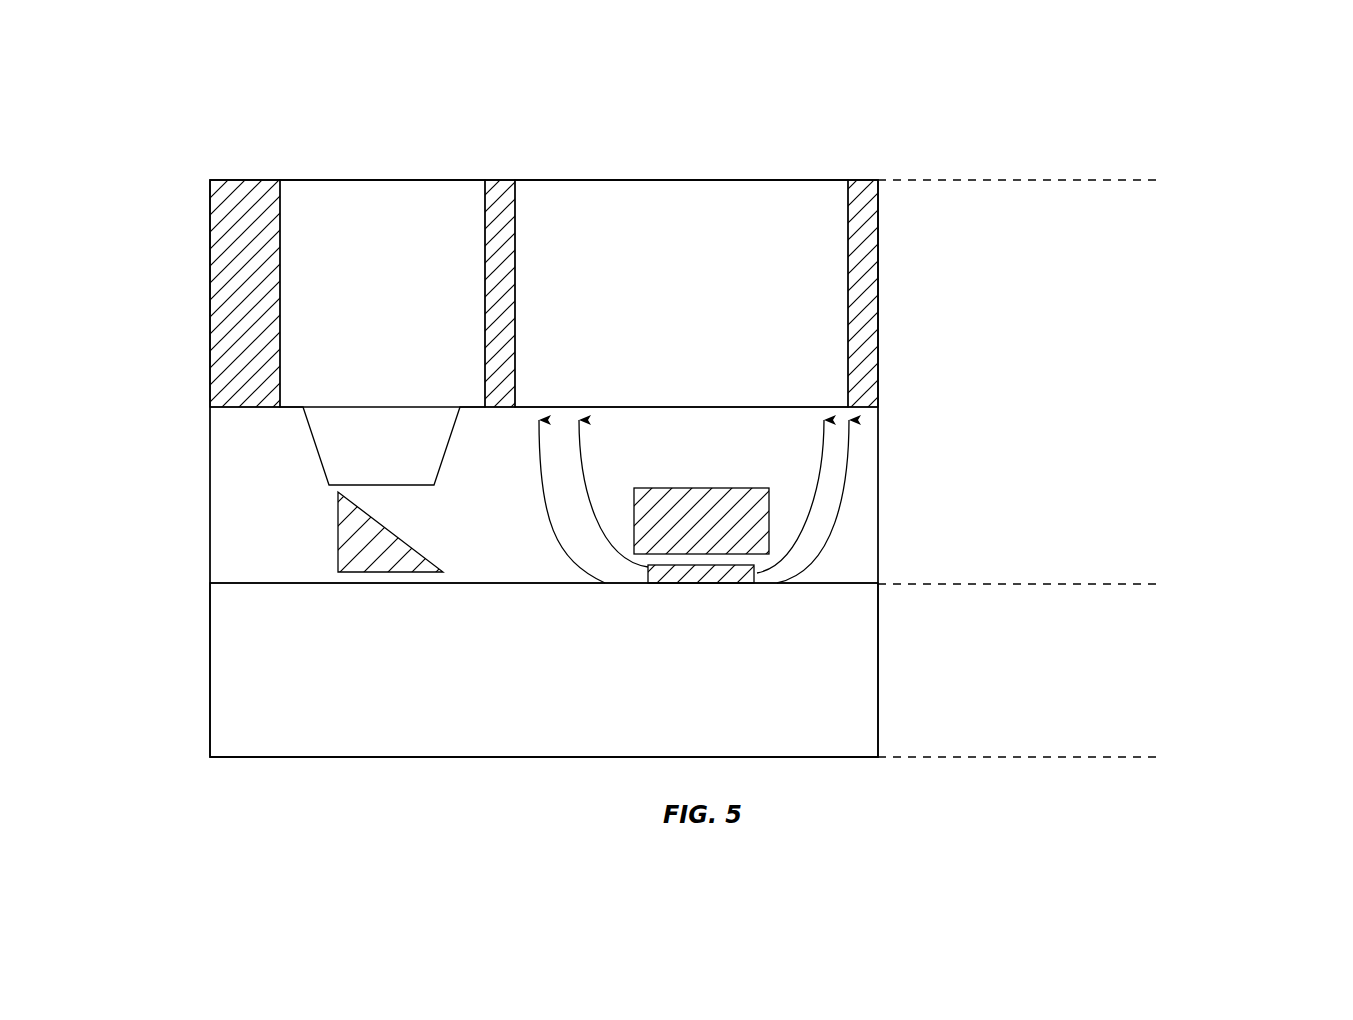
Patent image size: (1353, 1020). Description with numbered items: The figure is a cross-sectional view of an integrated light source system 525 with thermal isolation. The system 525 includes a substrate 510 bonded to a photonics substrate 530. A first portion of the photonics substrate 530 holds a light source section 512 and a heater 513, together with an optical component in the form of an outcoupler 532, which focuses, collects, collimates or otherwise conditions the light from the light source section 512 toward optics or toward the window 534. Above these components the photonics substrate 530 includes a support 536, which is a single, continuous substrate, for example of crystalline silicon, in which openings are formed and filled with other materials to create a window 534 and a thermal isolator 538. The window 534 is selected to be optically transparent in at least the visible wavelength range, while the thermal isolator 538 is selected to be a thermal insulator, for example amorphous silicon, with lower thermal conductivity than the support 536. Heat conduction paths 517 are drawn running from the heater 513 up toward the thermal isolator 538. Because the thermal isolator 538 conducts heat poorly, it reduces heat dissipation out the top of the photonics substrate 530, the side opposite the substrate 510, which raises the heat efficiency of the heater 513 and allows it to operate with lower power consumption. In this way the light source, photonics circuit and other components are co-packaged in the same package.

The system 525 is at (107, 147).
The support 536 is at (875, 148).
The window 534 is at (380, 203).
The thermal isolator 538 is at (687, 202).
The photonics substrate 530 is at (1160, 583).
The substrate 510 is at (1160, 757).
The light source section 512 is at (763, 523).
The heat conduction paths 517 is at (807, 573).
The outcoupler 532 is at (387, 583).
The heater 513 is at (700, 583).